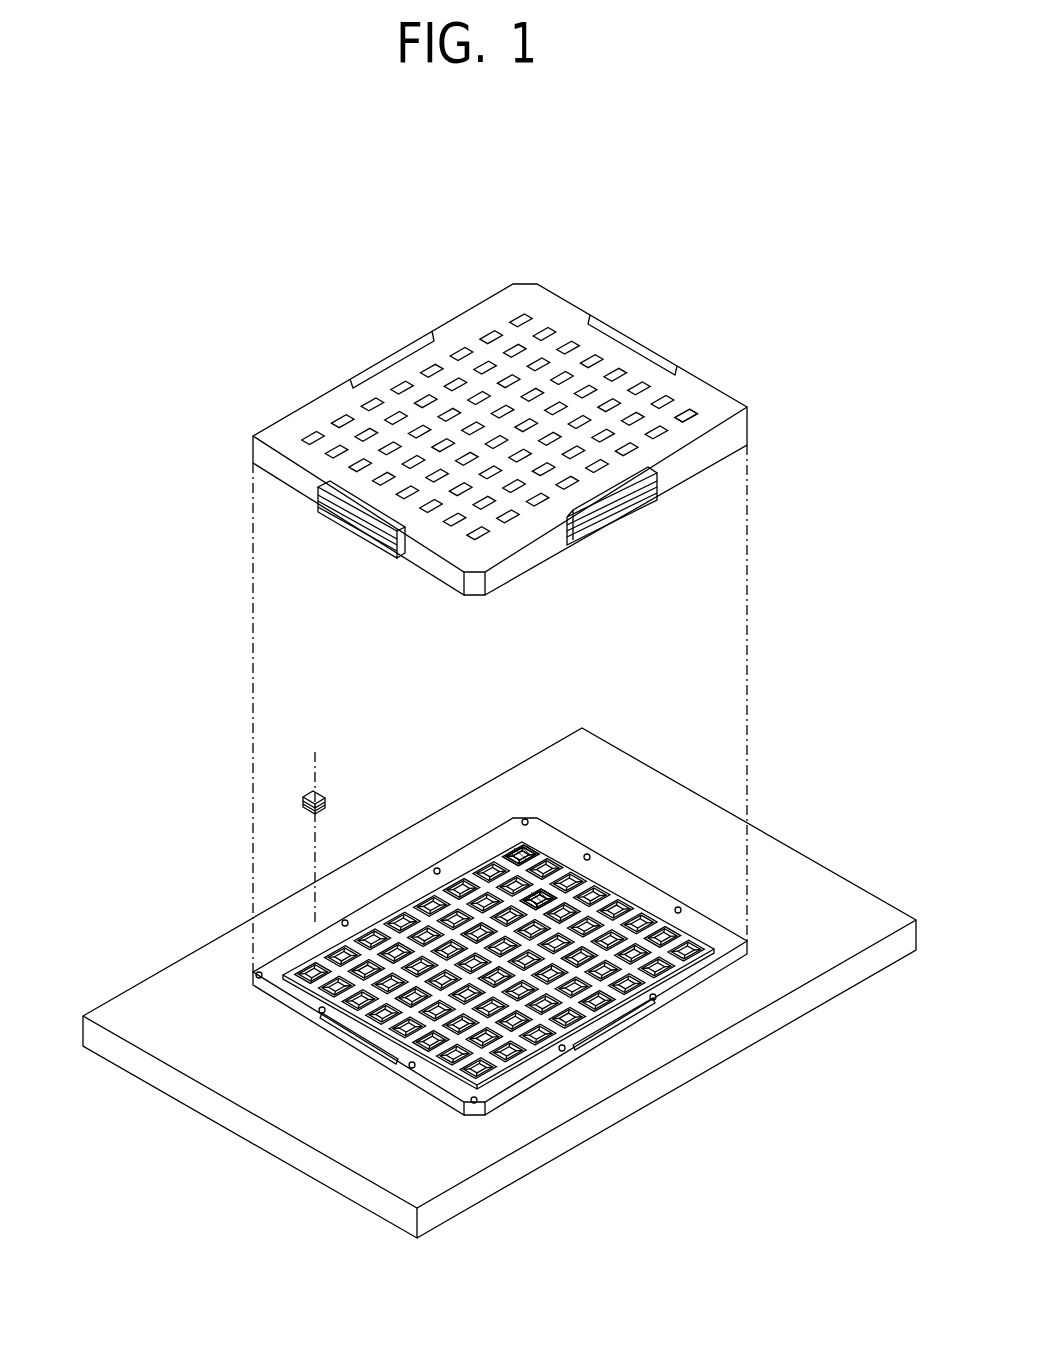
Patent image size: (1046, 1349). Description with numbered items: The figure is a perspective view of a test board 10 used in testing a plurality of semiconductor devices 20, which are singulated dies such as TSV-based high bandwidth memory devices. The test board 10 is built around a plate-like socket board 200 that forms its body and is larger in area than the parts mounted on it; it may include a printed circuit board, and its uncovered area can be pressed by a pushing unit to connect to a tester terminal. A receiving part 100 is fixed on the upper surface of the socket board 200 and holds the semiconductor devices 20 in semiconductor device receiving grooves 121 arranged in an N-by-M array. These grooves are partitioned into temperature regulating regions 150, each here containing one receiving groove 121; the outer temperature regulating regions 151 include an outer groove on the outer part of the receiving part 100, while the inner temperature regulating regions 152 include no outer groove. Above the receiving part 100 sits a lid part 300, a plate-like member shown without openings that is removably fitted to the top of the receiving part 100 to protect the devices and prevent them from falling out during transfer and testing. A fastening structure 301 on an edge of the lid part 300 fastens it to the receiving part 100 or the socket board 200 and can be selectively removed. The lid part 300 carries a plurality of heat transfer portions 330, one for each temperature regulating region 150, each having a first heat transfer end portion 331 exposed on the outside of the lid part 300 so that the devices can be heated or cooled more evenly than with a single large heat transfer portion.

The test board 10 is at (172, 352).
The semiconductor device 20 is at (316, 821).
The receiving part 100 is at (500, 938).
The semiconductor device receiving groove 121 is at (403, 925).
The temperature regulating region 150 is at (558, 767).
The outer temperature regulating region 151 is at (507, 845).
The inner temperature regulating region 152 is at (538, 890).
The socket board 200 is at (155, 1003).
The lid part 300 is at (527, 413).
The fastening structure 301 is at (383, 370).
The heat transfer portion 330 is at (700, 405).
The first heat transfer end portion 331 is at (689, 409).